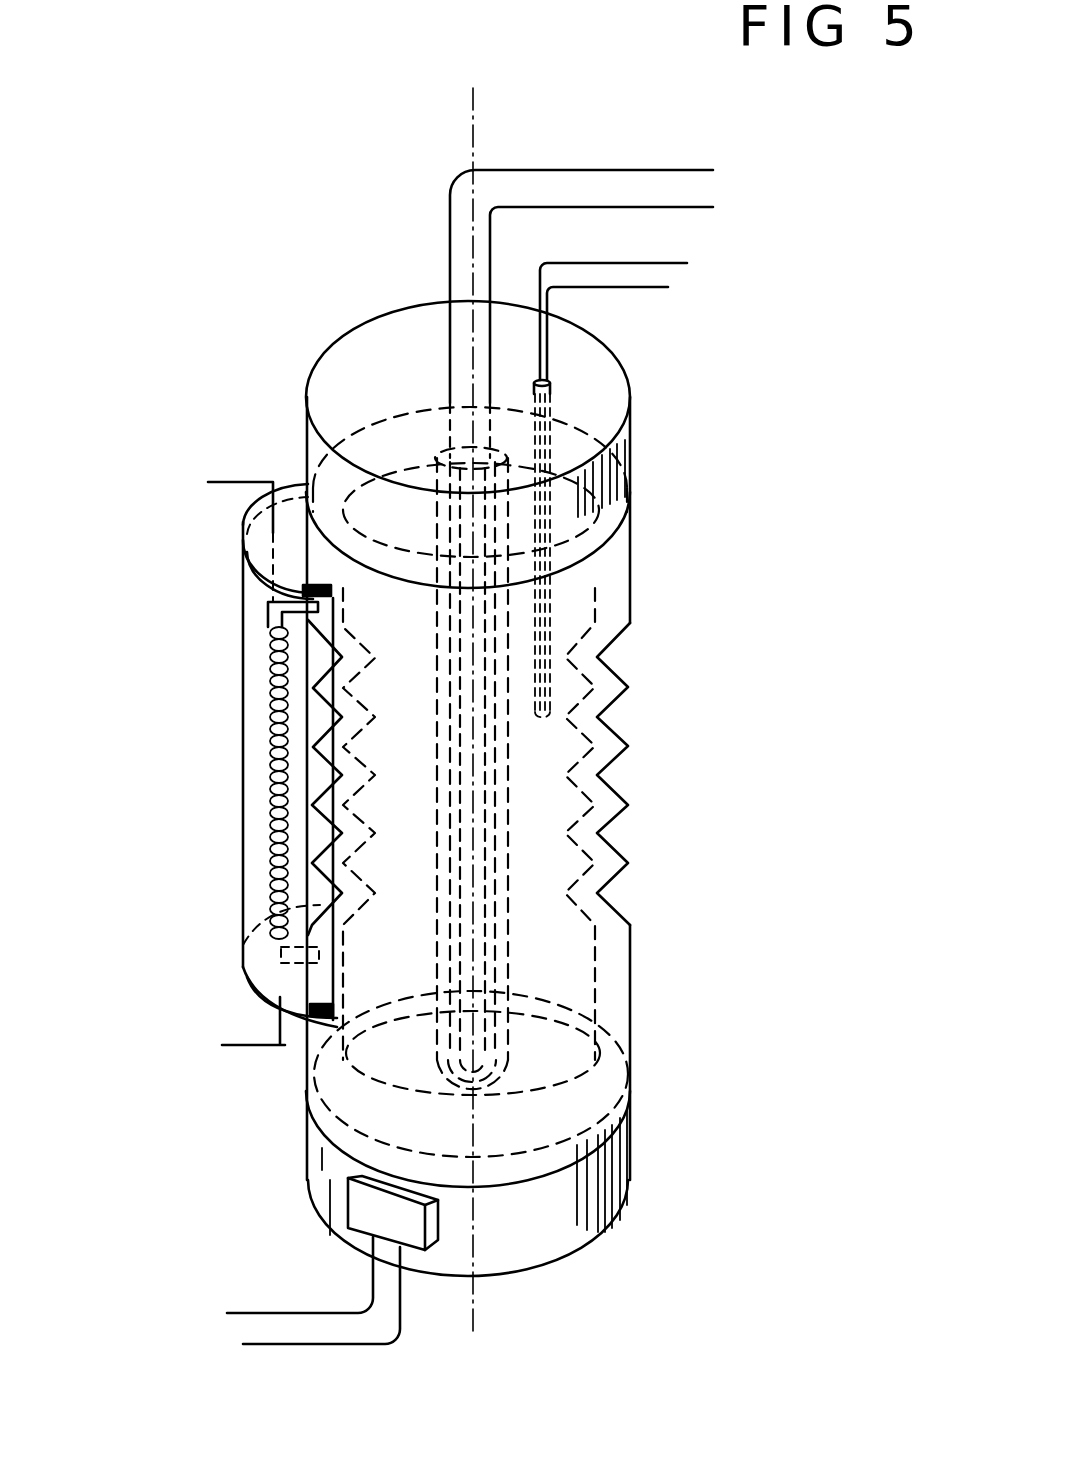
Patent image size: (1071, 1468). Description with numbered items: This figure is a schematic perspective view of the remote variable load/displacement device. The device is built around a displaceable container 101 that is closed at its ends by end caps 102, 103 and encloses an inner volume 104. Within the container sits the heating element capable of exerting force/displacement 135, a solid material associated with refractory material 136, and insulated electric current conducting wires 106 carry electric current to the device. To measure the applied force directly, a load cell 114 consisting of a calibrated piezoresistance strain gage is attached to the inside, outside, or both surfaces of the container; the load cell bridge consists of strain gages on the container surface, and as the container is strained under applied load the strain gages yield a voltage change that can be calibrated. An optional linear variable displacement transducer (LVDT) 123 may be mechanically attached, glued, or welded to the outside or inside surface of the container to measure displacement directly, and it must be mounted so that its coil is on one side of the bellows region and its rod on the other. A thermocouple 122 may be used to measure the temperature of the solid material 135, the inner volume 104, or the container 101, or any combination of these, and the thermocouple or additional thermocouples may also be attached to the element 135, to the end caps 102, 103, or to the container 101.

The displaceable container 101 is at (600, 978).
The end cap 102 is at (567, 1210).
The end cap 103 is at (550, 393).
The inner volume 104 is at (523, 683).
The insulated electric current conducting wires 106 is at (488, 292).
The load cell 114 is at (367, 1207).
The thermocouple 122 is at (671, 264).
The linear variable displacement transducer (LVDT) 123 is at (240, 1045).
The heating element capable of exerting force/displacement 135 is at (508, 780).
The refractory material 136 is at (497, 905).